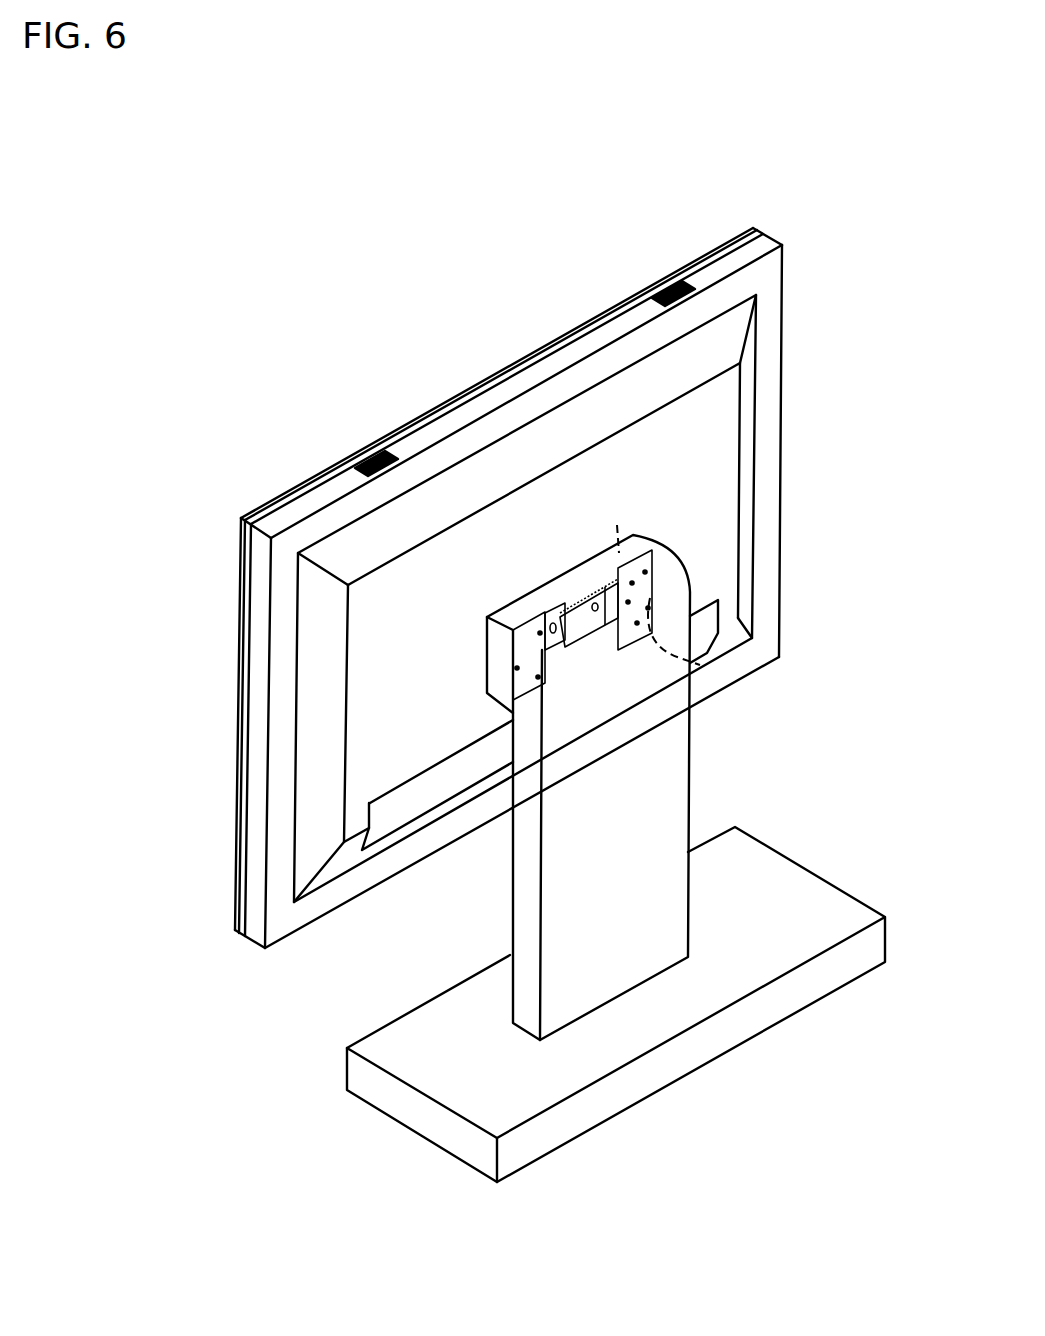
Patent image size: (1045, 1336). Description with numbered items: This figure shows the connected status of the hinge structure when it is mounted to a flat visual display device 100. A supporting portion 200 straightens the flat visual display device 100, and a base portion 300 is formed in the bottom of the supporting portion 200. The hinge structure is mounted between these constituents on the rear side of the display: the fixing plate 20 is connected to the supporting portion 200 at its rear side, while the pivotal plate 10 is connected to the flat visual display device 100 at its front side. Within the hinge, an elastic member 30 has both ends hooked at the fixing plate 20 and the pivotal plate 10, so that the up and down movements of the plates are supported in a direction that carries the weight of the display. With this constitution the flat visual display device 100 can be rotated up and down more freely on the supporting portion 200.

The flat visual display device 100 is at (767, 323).
The supporting portion 200 is at (665, 793).
The base portion 300 is at (832, 907).
The fixing plate 20 is at (645, 605).
The pivotal plate 10 is at (700, 665).
The elastic member 30 is at (617, 525).